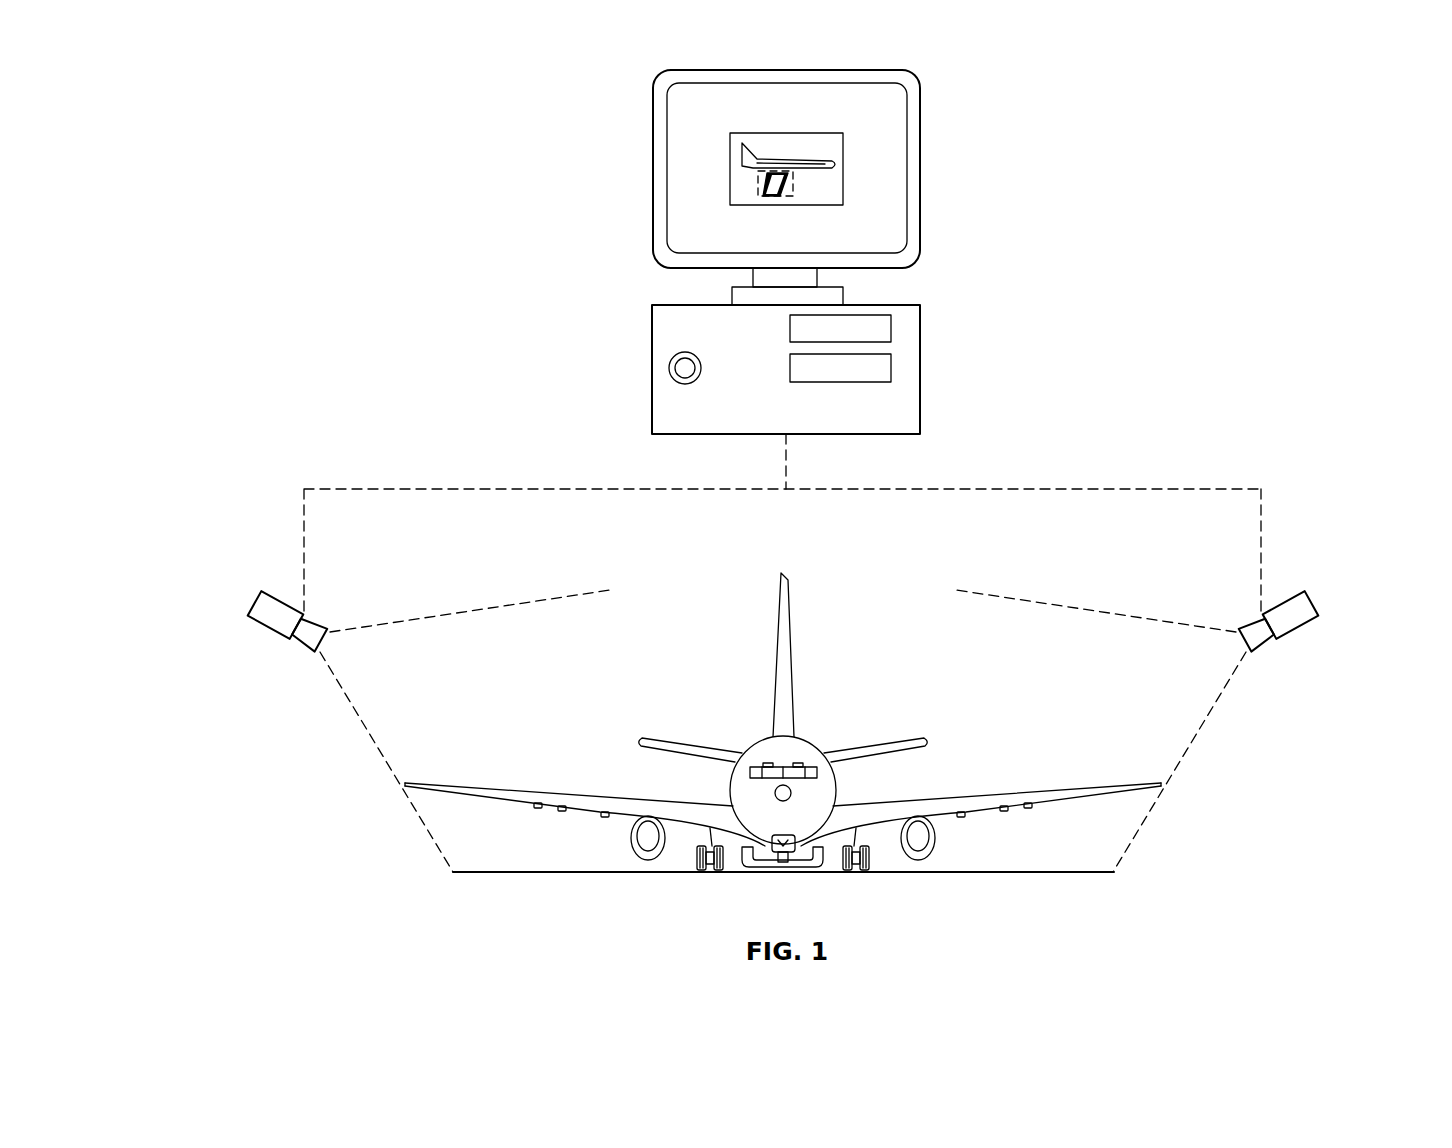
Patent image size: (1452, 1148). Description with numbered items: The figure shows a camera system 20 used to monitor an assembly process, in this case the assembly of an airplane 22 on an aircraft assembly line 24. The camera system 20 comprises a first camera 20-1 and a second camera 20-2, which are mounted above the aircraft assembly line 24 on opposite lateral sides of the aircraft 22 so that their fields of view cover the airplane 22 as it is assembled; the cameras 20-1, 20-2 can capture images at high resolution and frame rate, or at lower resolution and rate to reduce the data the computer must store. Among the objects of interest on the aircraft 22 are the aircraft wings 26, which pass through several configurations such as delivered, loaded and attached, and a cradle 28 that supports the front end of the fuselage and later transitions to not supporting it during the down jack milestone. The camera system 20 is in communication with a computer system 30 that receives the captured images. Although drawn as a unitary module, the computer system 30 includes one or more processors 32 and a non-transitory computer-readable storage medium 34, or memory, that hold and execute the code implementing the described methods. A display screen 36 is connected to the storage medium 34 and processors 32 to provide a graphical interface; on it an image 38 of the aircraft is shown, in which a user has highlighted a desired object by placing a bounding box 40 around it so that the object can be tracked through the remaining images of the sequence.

The camera system 20 is at (443, 413).
The first camera 20-1 is at (260, 597).
The second camera 20-2 is at (1304, 595).
The airplane 22 is at (783, 749).
The aircraft assembly line 24 is at (1203, 432).
The aircraft wing 26 is at (540, 800).
The cradle 28 is at (762, 867).
The computer system 30 is at (1003, 73).
The processor 32 is at (790, 328).
The non-transitory computer-readable storage medium 34 is at (790, 370).
The display screen 36 is at (653, 123).
The image 38 is at (730, 158).
The bounding box 40 is at (793, 188).